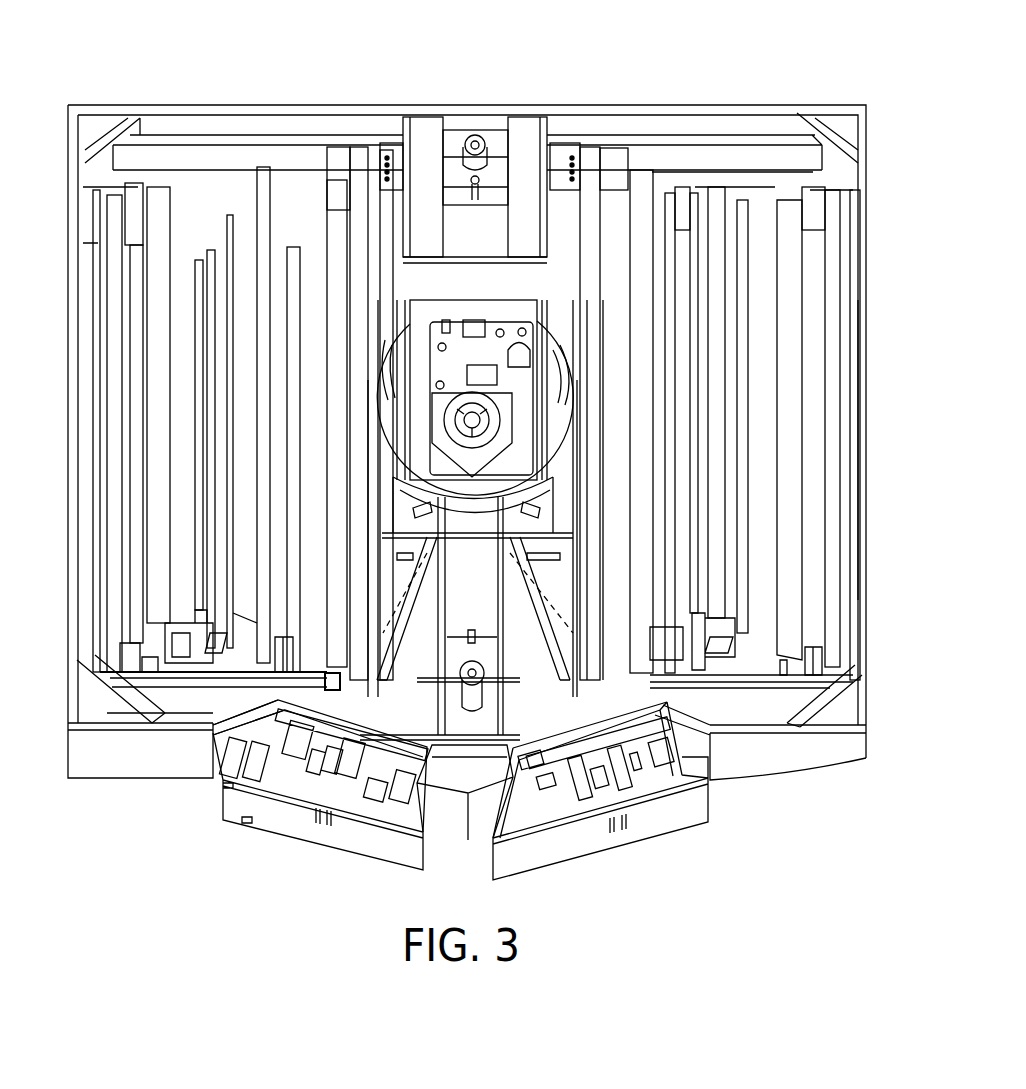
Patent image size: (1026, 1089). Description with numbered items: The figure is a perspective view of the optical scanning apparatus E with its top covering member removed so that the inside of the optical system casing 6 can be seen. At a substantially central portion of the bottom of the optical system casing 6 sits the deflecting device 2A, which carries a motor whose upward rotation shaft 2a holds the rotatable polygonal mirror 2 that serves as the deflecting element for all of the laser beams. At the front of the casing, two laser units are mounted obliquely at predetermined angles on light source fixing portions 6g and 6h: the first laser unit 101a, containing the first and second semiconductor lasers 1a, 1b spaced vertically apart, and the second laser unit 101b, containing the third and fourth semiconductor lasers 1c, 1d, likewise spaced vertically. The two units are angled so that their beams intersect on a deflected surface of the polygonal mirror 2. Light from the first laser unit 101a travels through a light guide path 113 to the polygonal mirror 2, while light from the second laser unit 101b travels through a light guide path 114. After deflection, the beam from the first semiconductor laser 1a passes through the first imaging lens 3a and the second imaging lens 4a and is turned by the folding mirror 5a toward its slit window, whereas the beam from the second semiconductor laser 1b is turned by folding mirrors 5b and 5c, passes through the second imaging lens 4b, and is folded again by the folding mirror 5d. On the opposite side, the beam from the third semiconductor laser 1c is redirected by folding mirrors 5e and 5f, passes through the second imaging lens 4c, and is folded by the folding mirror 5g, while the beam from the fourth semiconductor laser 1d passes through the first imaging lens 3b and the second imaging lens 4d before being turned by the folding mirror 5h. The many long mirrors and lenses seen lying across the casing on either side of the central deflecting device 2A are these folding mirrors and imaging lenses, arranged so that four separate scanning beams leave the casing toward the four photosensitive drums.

The image forming apparatus E is at (795, 76).
The folding mirror 5d is at (360, 162).
The folding mirror 5g is at (598, 217).
The folding mirror 5h is at (833, 218).
The folding mirror 5a is at (115, 258).
The deflecting device 2A is at (500, 322).
The first imaging lens 3a is at (380, 357).
The first imaging lens 3b is at (560, 350).
The second imaging lens 4d is at (792, 313).
The second imaging lens 4a is at (157, 347).
The rotation shaft 2a is at (470, 420).
The polygonal mirror 2 is at (503, 403).
The folding mirror 5c is at (217, 402).
The optical system casing 6 is at (875, 393).
The folding mirror 5b is at (303, 503).
The folding mirror 5f is at (728, 452).
The folding mirror 5e is at (702, 490).
The second imaging lens 4b is at (277, 555).
The second imaging lens 4c is at (673, 530).
The light guide path 114 is at (563, 600).
The light guide path 113 is at (387, 633).
The light source fixing portion 6g is at (408, 700).
The light source fixing portion 6h is at (600, 695).
The laser unit 101a is at (292, 832).
The second semiconductor laser 1b is at (320, 843).
The first semiconductor laser 1a is at (330, 835).
The fourth semiconductor laser 1d is at (612, 840).
The third semiconductor laser 1c is at (625, 838).
The laser unit 101b is at (653, 825).